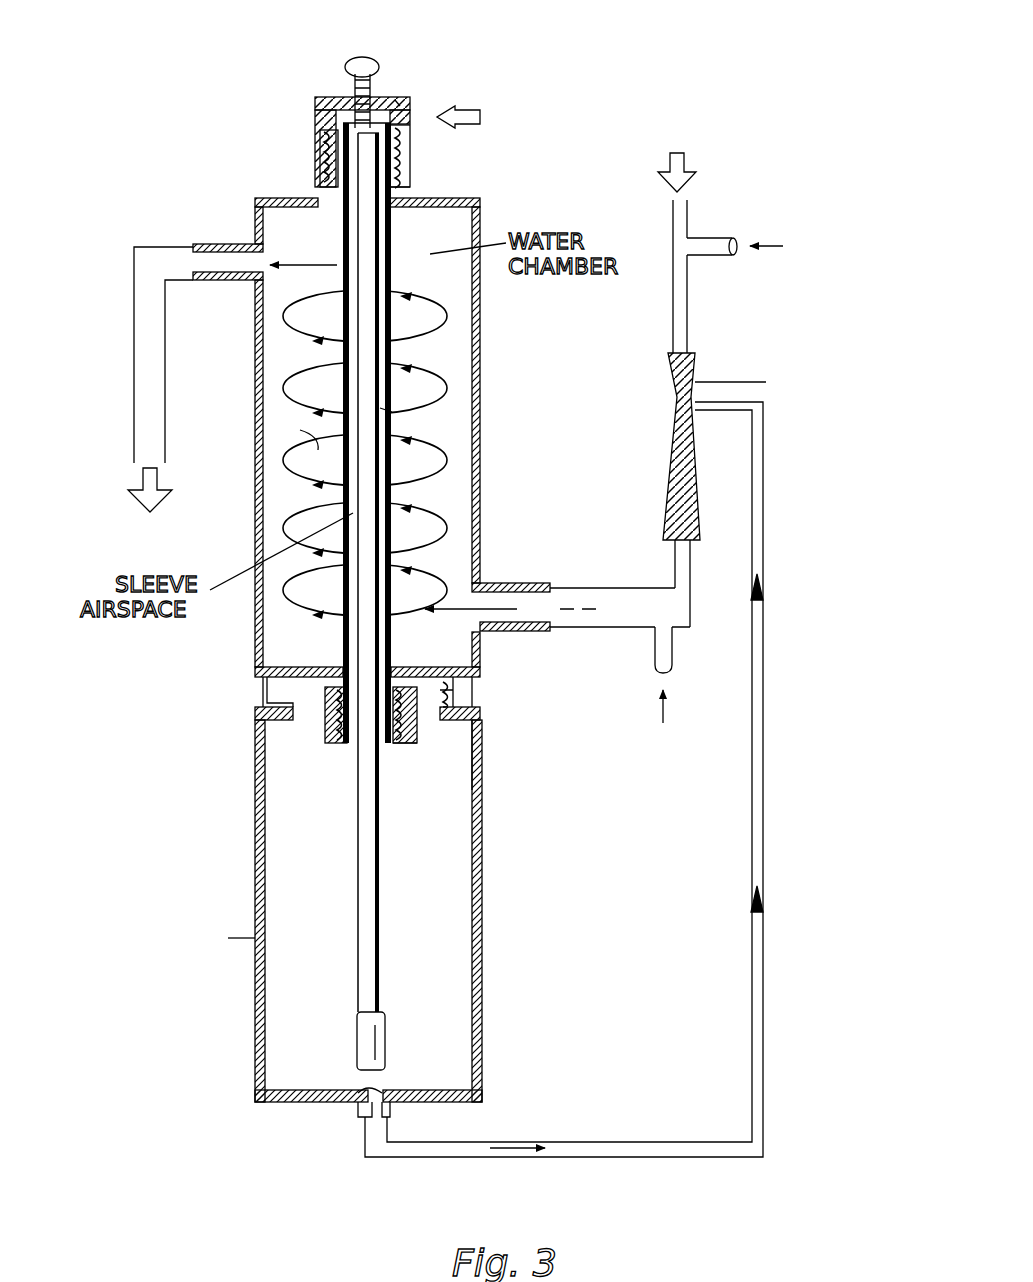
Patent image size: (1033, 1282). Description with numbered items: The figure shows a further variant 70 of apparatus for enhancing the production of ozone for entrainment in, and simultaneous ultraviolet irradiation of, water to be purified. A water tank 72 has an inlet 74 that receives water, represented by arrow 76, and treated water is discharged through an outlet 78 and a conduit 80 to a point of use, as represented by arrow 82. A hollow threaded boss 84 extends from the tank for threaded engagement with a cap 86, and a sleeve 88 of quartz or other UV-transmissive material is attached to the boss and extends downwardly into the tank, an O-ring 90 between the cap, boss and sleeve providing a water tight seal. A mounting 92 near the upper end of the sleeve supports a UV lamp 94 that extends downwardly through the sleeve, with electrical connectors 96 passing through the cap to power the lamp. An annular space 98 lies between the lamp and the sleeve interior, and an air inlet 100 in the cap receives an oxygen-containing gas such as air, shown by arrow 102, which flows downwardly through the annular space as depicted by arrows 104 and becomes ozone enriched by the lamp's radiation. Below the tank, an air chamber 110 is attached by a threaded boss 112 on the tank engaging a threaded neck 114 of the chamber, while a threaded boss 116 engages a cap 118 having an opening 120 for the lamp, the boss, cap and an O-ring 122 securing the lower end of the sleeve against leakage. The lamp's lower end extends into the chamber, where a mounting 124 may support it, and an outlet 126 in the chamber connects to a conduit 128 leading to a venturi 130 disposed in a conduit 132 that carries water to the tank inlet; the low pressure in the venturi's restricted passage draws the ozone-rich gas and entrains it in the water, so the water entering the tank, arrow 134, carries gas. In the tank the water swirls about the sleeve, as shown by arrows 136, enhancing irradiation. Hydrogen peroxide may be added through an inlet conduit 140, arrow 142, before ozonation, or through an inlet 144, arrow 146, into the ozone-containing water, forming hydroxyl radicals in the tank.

The variant 70 is at (834, 808).
The water tank 72 is at (481, 408).
The inlet 74 is at (500, 583).
The arrow 76 is at (695, 180).
The outlet 78 is at (208, 243).
The conduit 80 is at (134, 410).
The arrow 82 is at (143, 506).
The hollow threaded boss 84 is at (405, 190).
The cap 86 is at (315, 114).
The sleeve 88 is at (393, 245).
The O-ring 90 is at (330, 145).
The mounting 92 is at (412, 157).
The UV lamp 94 is at (398, 347).
The electrical connectors 96 is at (380, 60).
The annular space 98 is at (398, 410).
The air inlet 100 is at (398, 104).
The arrow 102 is at (455, 104).
The arrows 104 is at (395, 270).
The air chamber 110 is at (482, 908).
The threaded boss 112 is at (455, 694).
The threaded neck 114 is at (440, 715).
The threaded boss 116 is at (428, 665).
The cap 118 is at (325, 722).
The opening 120 is at (397, 743).
The O-ring 122 is at (480, 765).
The mounting 124 is at (385, 1040).
The outlet 126 is at (350, 1095).
The conduit 128 is at (628, 1140).
The venturi 130 is at (668, 465).
The conduit 132 is at (690, 320).
The arrow 134 is at (450, 605).
The arrows 136 is at (318, 450).
The inlet conduit 140 is at (740, 238).
The arrow 142 is at (785, 245).
The inlet 144 is at (673, 655).
The arrow 146 is at (665, 712).